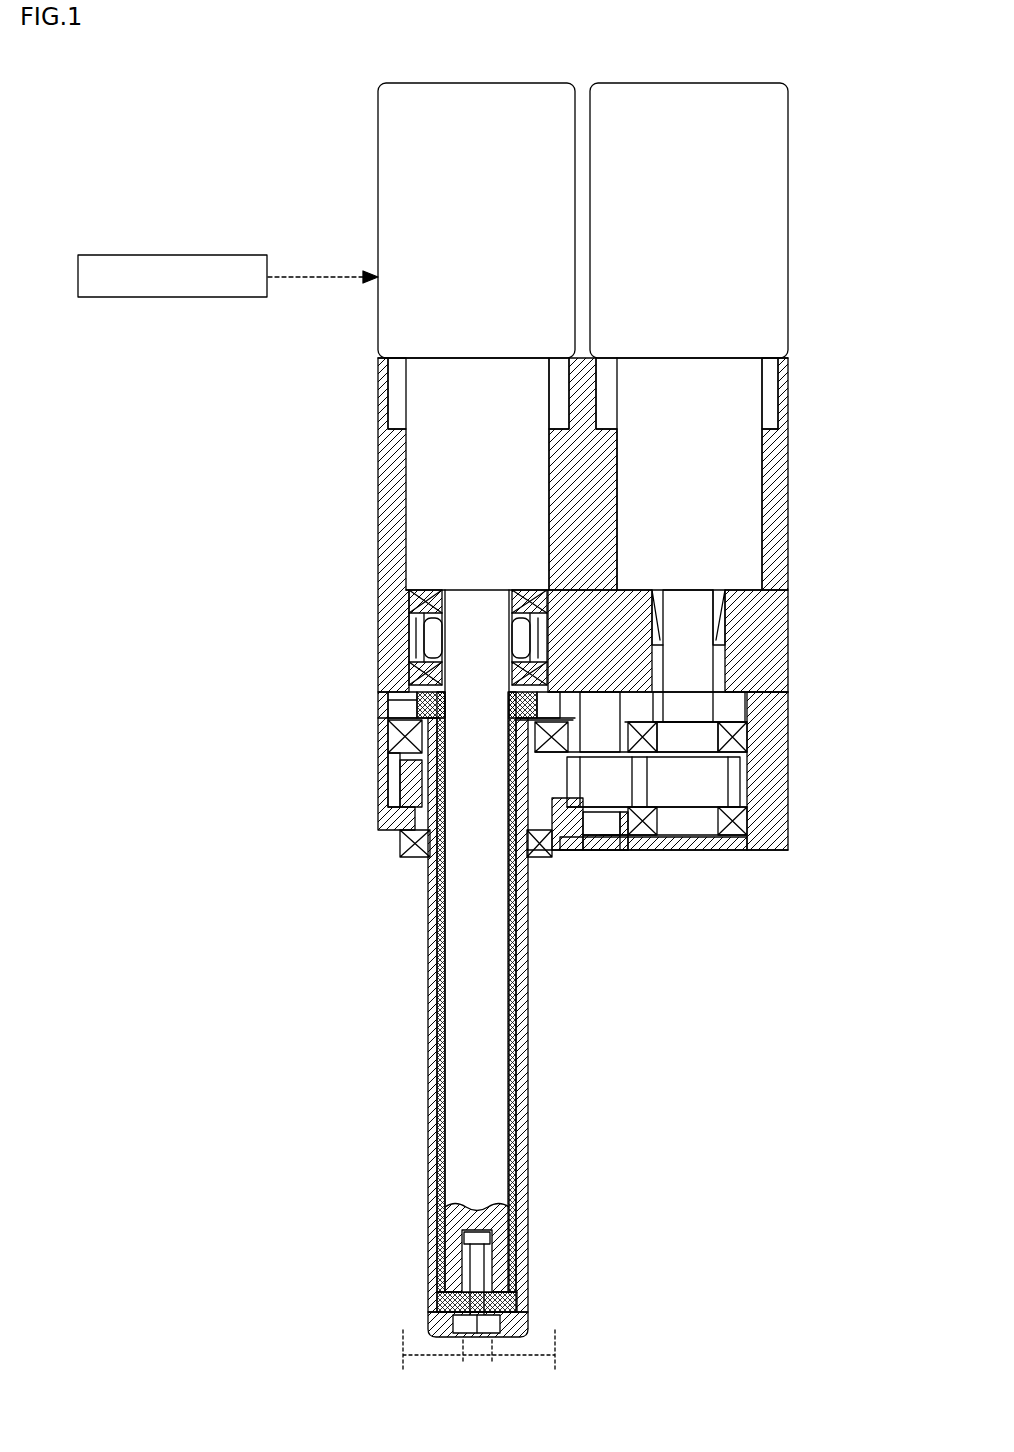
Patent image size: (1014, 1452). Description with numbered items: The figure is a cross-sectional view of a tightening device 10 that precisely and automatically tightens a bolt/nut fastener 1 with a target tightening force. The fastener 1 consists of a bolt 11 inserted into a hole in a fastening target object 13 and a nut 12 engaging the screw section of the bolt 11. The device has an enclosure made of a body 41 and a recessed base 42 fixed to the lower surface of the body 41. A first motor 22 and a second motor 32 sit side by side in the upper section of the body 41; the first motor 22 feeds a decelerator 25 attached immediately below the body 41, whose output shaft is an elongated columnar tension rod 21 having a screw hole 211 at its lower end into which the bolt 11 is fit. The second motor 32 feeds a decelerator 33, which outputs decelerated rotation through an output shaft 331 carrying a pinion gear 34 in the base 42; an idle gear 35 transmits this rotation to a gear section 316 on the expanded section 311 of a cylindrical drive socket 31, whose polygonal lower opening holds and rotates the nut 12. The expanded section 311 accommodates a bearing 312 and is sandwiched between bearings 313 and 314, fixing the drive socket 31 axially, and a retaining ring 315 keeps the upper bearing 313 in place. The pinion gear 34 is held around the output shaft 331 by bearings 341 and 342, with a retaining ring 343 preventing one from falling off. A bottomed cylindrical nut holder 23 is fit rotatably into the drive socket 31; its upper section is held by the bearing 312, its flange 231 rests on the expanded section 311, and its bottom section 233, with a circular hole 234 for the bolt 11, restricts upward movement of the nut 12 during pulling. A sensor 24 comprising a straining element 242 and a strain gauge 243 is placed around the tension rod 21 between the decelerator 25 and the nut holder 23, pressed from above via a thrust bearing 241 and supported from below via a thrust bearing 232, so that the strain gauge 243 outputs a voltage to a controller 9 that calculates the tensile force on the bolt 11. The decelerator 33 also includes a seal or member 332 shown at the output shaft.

The bolt/nut fastener 1 is at (439, 1301).
The controller 9 is at (197, 255).
The tightening device 10 is at (333, 87).
The bolt 11 is at (440, 1257).
The nut 12 is at (430, 1312).
The fastening target object 13 is at (452, 1341).
The tension rod 21 is at (530, 941).
The first motor 22 is at (393, 197).
The nut holder 23 is at (461, 997).
The sensor 24 is at (413, 619).
The decelerator 25 is at (400, 488).
The drive socket 31 is at (471, 1014).
The second motor 32 is at (755, 194).
The decelerator 33 is at (778, 489).
The pinion gear 34 is at (722, 790).
The idle gear 35 is at (620, 800).
The body 41 is at (788, 632).
The base 42 is at (788, 778).
The screw hole 211 is at (485, 1243).
The flange 231 is at (415, 703).
The thrust bearing 232 is at (410, 683).
The bottom section 233 is at (495, 1300).
The circular hole 234 is at (515, 1316).
The thrust bearing 241 is at (410, 592).
The straining element 242 is at (413, 611).
The strain gauge 243 is at (420, 638).
The expanded section 311 is at (387, 812).
The bearing 312 is at (400, 785).
The bearing 313 is at (380, 742).
The bearing 314 is at (400, 852).
The retaining ring 315 is at (387, 715).
The gear section 316 is at (555, 805).
The output shaft 331 is at (718, 702).
The seal member 332 is at (728, 603).
The bearing 341 is at (758, 742).
The bearing 342 is at (758, 827).
The retaining ring 343 is at (745, 722).